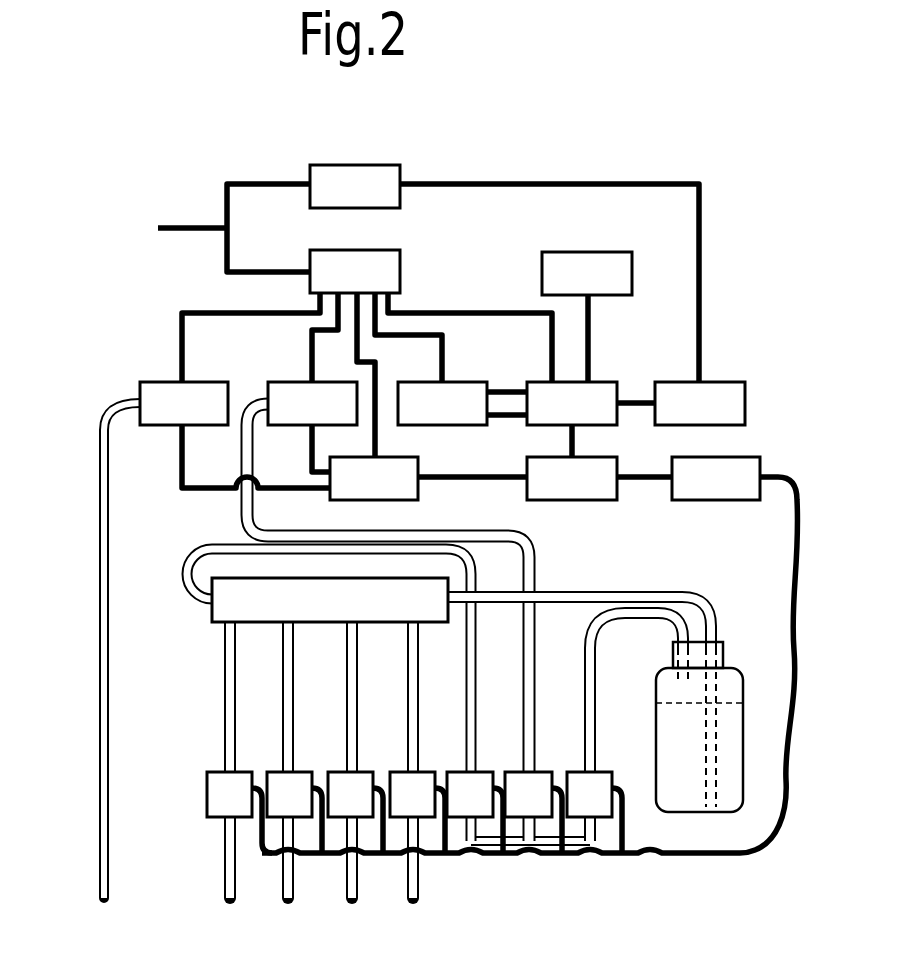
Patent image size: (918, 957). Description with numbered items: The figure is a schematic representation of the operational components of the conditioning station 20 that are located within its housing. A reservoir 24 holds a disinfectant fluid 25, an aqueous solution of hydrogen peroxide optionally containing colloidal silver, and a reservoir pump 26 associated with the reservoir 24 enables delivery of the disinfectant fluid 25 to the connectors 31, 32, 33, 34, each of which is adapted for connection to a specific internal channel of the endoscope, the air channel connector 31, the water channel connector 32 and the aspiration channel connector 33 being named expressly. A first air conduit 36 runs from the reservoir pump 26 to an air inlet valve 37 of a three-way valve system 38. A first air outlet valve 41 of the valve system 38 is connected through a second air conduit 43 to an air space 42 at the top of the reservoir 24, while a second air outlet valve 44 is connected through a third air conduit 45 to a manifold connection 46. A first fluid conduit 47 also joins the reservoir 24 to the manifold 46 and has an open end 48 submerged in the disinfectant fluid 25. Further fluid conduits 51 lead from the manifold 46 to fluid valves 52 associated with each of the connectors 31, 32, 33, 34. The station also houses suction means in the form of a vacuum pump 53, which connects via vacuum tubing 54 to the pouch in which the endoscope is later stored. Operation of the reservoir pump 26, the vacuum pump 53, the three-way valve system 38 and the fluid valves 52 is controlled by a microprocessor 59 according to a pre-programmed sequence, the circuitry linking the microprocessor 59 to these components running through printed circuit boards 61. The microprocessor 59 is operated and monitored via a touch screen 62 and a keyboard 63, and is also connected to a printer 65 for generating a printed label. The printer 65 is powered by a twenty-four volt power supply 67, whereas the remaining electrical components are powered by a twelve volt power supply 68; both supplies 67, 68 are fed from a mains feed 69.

The conditioning station 20 is at (660, 168).
The mains feed 69 is at (192, 223).
The 24V power supply 67 is at (355, 186).
The 12V power supply 68 is at (355, 271).
The keyboard 63 is at (587, 273).
The vacuum pump 53 is at (184, 403).
The reservoir pump 26 is at (312, 403).
The touch screen 62 is at (442, 403).
The microprocessor 59 is at (572, 403).
The printer 65 is at (700, 403).
The printed circuit boards 61 is at (545, 478).
The first air conduit 36 is at (245, 531).
The third air conduit 45 is at (196, 585).
The manifold connection 46 is at (330, 600).
The first fluid conduit 47 is at (687, 594).
The air space 42 is at (728, 680).
The reservoir 24 is at (743, 734).
The second air conduit 43 is at (594, 750).
The further fluid conduits 51 is at (409, 743).
The fluid valves 52 is at (426, 807).
The second air outlet valve 44 is at (456, 807).
The air inlet valve 37 is at (515, 807).
The first air outlet valve 41 is at (576, 807).
The vacuum tubing 54 is at (106, 877).
The air channel connector 31 is at (225, 882).
The water channel connector 32 is at (283, 882).
The aspiration channel connector 33 is at (348, 880).
The connector 34 is at (408, 882).
The three-way valve system 38 is at (550, 840).
The open end 48 is at (707, 810).
The disinfectant fluid 25 is at (730, 787).